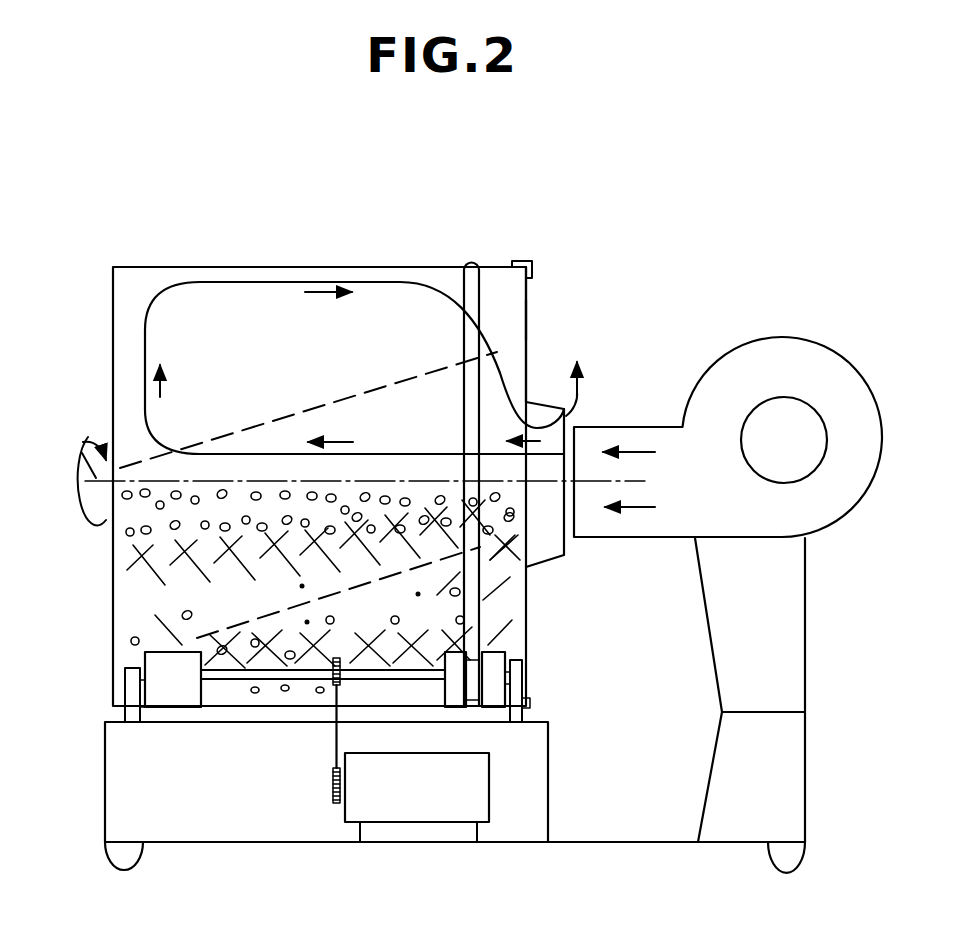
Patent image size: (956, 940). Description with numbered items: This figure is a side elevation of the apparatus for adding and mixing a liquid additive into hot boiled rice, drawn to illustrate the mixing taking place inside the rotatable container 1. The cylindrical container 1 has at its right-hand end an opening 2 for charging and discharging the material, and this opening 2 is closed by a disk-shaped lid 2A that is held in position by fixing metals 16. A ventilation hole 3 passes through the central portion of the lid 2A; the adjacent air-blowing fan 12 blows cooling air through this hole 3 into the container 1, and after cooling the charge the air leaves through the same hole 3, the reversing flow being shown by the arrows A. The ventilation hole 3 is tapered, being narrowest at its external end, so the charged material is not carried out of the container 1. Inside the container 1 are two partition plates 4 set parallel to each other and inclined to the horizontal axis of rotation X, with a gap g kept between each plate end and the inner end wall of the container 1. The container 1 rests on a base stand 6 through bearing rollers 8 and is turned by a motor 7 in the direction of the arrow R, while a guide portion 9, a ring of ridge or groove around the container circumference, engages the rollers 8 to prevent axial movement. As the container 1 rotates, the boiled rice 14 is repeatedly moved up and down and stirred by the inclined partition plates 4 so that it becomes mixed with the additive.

The rotatable container 1 is at (300, 267).
The opening 2 is at (512, 287).
The lid 2A is at (522, 303).
The ventilation hole 3 is at (564, 533).
The partition plate 4 is at (255, 428).
The base stand 6 is at (310, 813).
The motor 7 is at (447, 807).
The bearing roller 8 is at (145, 655).
The guide portion 9 is at (473, 627).
The air-blowing fan 12 is at (772, 350).
The boiled rice 14 is at (125, 534).
The fixing metal 16 is at (522, 261).
The gap g is at (120, 460).
The axis of rotation X is at (78, 452).
The arrow showing direction of rotation R is at (95, 435).
The arrows showing airflow A is at (420, 396).